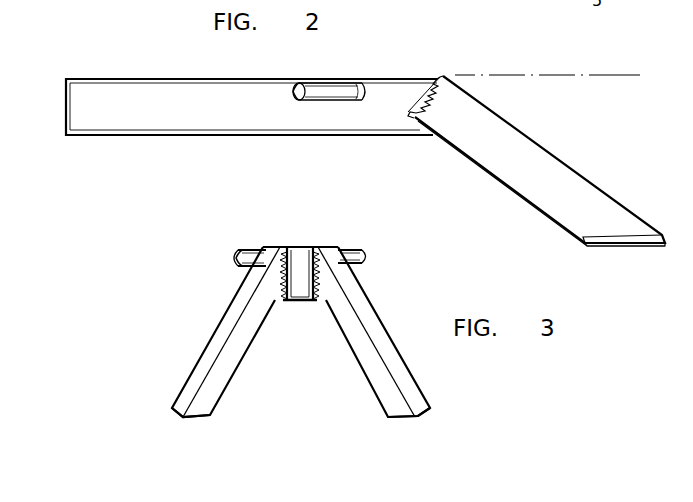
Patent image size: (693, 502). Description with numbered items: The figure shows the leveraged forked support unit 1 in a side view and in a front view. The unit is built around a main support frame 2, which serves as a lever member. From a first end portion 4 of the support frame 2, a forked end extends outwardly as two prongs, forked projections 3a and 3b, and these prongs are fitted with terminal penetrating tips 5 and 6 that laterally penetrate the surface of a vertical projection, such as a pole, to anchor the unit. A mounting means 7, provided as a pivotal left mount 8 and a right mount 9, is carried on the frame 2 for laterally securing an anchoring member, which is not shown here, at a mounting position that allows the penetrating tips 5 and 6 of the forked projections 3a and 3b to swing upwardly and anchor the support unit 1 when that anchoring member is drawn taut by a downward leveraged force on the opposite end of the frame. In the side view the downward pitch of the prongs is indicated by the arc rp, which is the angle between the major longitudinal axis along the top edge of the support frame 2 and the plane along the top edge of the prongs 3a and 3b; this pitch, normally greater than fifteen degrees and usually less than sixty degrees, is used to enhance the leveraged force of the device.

In FIG. 2, the leveraged forked support unit 1 is at (192, 73).
In FIG. 2, the main support frame 2 is at (102, 91).
In FIG. 2, the forked projection 3a is at (528, 177).
In FIG. 3, the forked projection 3a is at (219, 334).
In FIG. 3, the forked projection 3b is at (388, 346).
In FIG. 3, the first end portion 4 is at (299, 250).
In FIG. 2, the terminal penetrating tip 5 is at (605, 245).
In FIG. 3, the terminal penetrating tip 5 is at (199, 418).
In FIG. 3, the terminal penetrating tip 6 is at (404, 419).
In FIG. 2, the mounting means 7 is at (296, 84).
In FIG. 3, the mounting means 7 is at (250, 250).
In FIG. 3, the pivotal left mount 8 is at (366, 263).
In FIG. 2, the right mount 9 is at (320, 82).
In FIG. 3, the right mount 9 is at (232, 258).
In FIG. 2, the angle of downward pitch rp is at (622, 80).